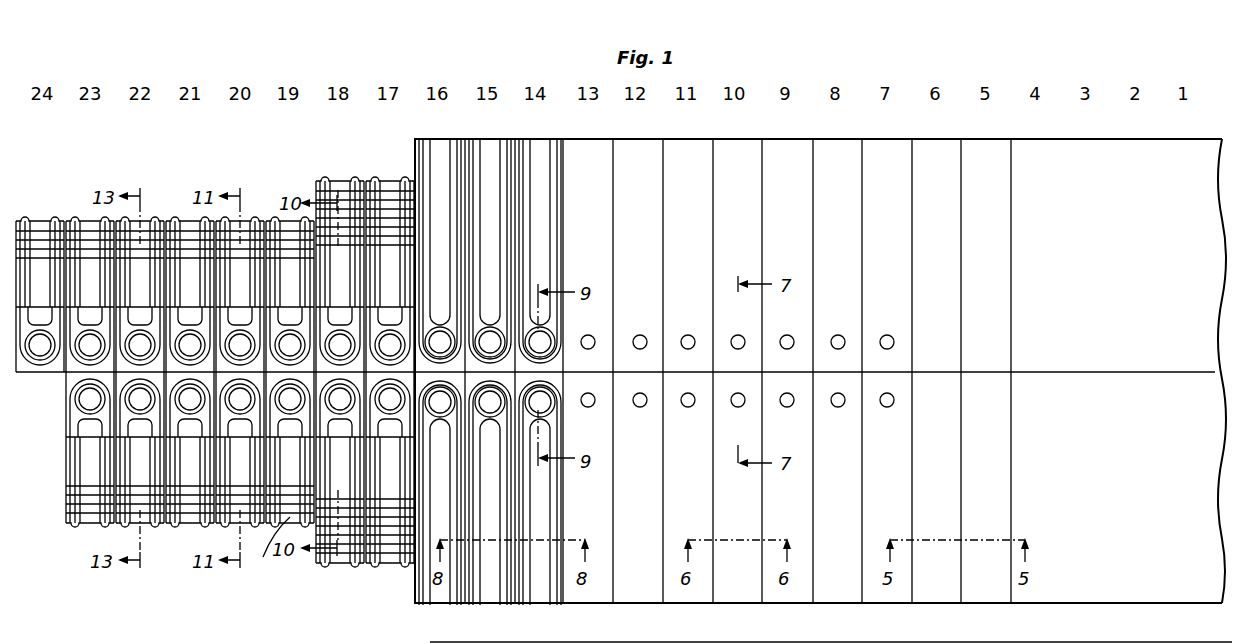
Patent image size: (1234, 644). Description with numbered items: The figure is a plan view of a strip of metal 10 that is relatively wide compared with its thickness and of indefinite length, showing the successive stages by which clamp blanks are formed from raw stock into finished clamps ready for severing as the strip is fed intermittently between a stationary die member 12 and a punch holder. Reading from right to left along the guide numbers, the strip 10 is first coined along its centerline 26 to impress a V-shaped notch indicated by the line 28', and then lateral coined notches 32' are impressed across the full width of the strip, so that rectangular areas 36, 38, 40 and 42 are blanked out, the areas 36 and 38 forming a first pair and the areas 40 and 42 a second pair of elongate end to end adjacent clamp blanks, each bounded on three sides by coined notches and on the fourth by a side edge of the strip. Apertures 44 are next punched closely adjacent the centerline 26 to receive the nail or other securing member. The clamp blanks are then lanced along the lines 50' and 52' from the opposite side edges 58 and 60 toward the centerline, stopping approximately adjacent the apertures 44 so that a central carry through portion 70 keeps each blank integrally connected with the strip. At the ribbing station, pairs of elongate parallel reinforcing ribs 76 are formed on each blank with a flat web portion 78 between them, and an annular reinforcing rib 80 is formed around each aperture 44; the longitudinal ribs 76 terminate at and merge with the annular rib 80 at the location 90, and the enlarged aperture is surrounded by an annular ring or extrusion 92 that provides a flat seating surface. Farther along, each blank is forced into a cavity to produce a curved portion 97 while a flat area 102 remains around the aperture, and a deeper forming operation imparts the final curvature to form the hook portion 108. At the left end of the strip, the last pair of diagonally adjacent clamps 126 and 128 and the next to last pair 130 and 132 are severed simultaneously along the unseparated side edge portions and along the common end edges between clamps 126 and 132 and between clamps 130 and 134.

The strip of metal 10 is at (1211, 578).
The stationary die member 12 is at (256, 379).
The centerline 26 is at (1209, 372).
The line 28' is at (1132, 397).
The lateral coined notches 32' is at (967, 456).
The rectangular area 36 is at (995, 213).
The rectangular area 38 is at (995, 435).
The rectangular area 40 is at (945, 195).
The rectangular area 42 is at (945, 435).
The apertures 44 is at (882, 336).
The lancing line 50' is at (738, 605).
The lancing line 52' is at (738, 205).
The side edge 58 is at (1163, 136).
The side edge 60 is at (1108, 606).
The central carry through portion 70 is at (748, 380).
The reinforcing ribs 76 is at (557, 149).
The flat web portion 78 is at (537, 600).
The annular reinforcing rib 80 is at (549, 390).
The rib merging location 90 is at (552, 413).
The annular ring or extrusion 92 is at (490, 390).
The curved portion 97 is at (386, 564).
The flat area 102 is at (400, 373).
The hook portion 108 is at (242, 516).
The clamp 126 is at (87, 528).
The clamp 128 is at (42, 221).
The clamp 130 is at (142, 516).
The clamp 132 is at (95, 220).
The clamp 134 is at (152, 220).